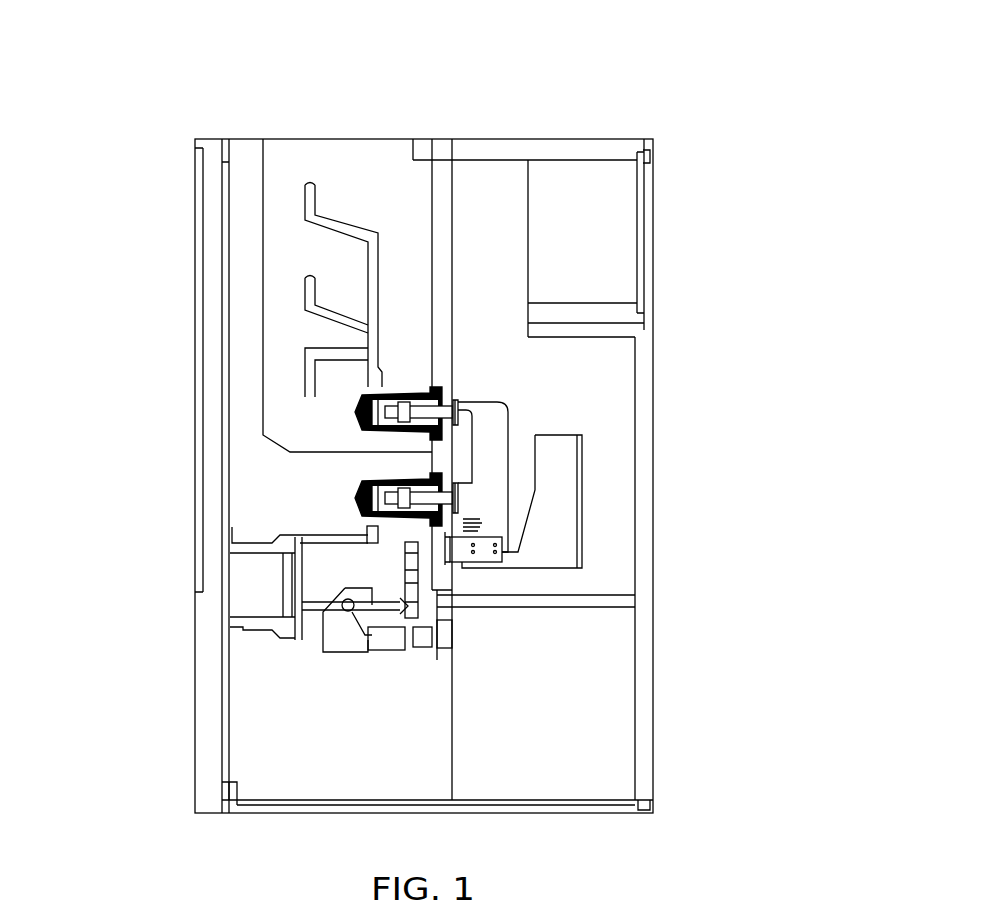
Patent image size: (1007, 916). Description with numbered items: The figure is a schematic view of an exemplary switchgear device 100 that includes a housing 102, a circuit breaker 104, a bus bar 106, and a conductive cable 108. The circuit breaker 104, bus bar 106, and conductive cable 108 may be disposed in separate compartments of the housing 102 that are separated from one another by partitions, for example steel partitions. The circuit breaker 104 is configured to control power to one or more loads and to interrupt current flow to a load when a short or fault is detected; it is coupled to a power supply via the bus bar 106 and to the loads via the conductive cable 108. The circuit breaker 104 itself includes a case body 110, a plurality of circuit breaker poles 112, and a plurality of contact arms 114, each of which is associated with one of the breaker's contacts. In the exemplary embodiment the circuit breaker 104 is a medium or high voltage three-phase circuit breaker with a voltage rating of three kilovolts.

The switchgear device 100 is at (110, 58).
The housing 102 is at (653, 253).
The circuit breaker 104 is at (556, 423).
The bus bar 106 is at (368, 278).
The conductive cable 108 is at (317, 535).
The case body 110 is at (582, 500).
The circuit breaker poles 112 is at (512, 410).
The contact arms 114 is at (460, 512).